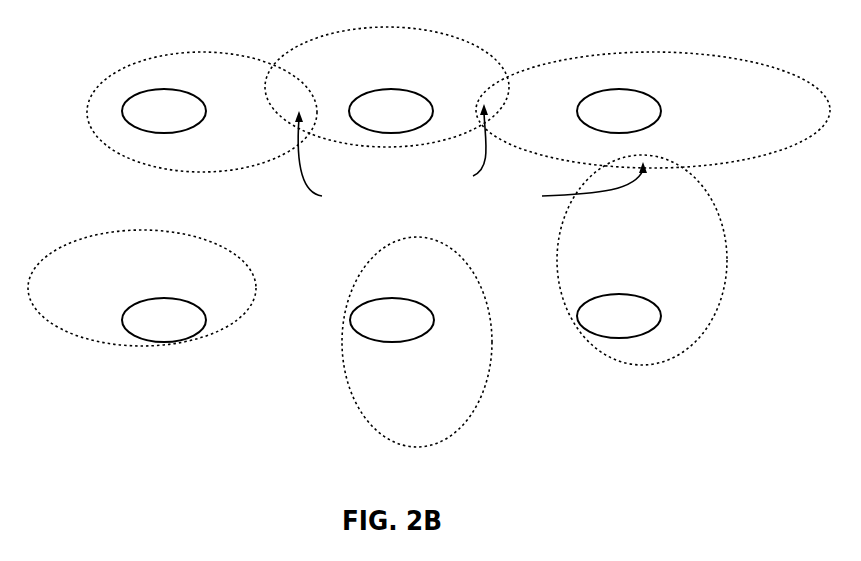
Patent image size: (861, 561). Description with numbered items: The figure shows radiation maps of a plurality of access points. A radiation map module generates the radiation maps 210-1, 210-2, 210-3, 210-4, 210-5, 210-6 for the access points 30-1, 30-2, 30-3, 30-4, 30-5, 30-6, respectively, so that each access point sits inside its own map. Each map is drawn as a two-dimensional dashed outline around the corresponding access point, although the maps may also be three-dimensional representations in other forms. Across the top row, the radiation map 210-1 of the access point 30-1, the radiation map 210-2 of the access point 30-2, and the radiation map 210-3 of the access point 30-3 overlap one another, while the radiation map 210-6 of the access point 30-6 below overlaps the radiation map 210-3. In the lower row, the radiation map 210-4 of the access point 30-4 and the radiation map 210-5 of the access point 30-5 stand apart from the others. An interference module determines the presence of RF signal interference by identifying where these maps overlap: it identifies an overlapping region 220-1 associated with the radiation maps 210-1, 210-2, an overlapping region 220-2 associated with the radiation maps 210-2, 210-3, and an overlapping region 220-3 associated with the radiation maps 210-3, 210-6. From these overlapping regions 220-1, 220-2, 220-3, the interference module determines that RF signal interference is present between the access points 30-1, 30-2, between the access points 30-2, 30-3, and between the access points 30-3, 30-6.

The radiation map 210-1 is at (213, 52).
The radiation map 210-2 is at (463, 40).
The radiation map 210-3 is at (700, 54).
The radiation map 210-4 is at (205, 240).
The radiation map 210-5 is at (450, 248).
The radiation map 210-6 is at (726, 243).
The access point 30-1 is at (207, 107).
The access point 30-2 is at (433, 107).
The access point 30-3 is at (661, 103).
The access point 30-4 is at (205, 310).
The access point 30-5 is at (433, 317).
The access point 30-6 is at (661, 309).
The overlapping region 220-1 is at (327, 157).
The overlapping region 220-2 is at (464, 144).
The overlapping region 220-3 is at (577, 182).